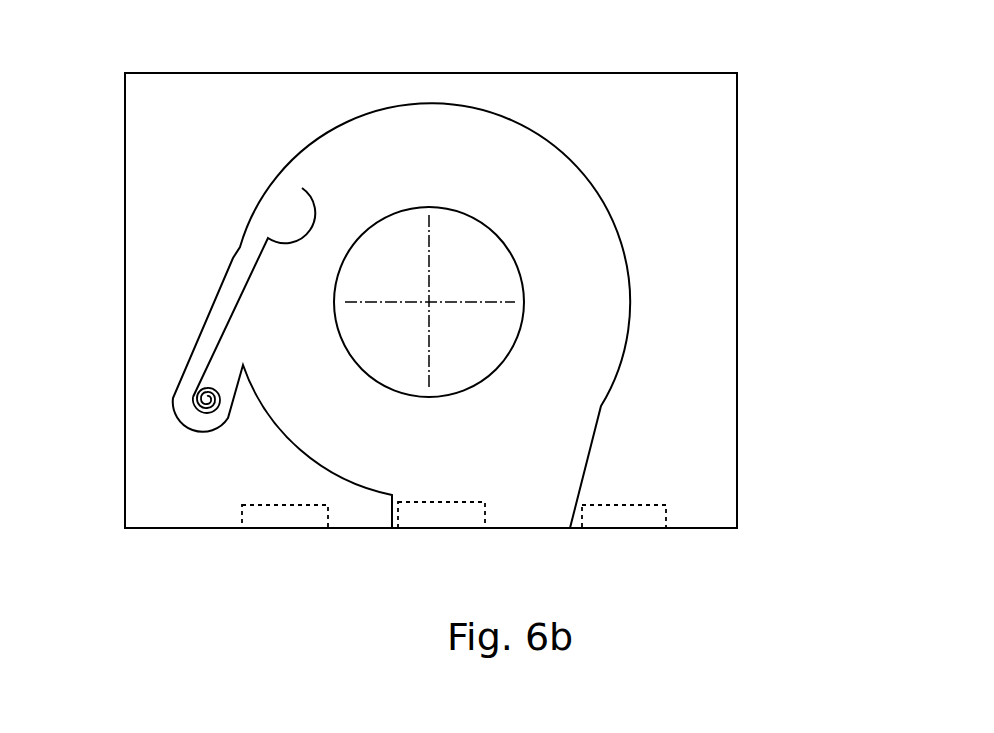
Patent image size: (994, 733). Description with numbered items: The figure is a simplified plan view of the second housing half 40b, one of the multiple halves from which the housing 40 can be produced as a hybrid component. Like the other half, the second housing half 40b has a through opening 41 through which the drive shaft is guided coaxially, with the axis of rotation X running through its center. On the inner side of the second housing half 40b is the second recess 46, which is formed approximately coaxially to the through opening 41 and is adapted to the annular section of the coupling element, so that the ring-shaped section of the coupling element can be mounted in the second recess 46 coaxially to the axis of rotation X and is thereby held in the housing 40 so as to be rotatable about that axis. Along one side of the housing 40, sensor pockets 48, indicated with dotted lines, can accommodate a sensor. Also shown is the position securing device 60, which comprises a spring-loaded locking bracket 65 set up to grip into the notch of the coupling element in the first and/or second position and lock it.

The housing 40 is at (306, 40).
The second housing half 40b is at (431, 264).
The through opening 41 is at (485, 342).
The second recess 46 is at (568, 263).
The sensor pockets 48 is at (280, 512).
The position securing device 60 is at (165, 318).
The locking bracket 65 is at (312, 225).
The axis of rotation X is at (430, 302).